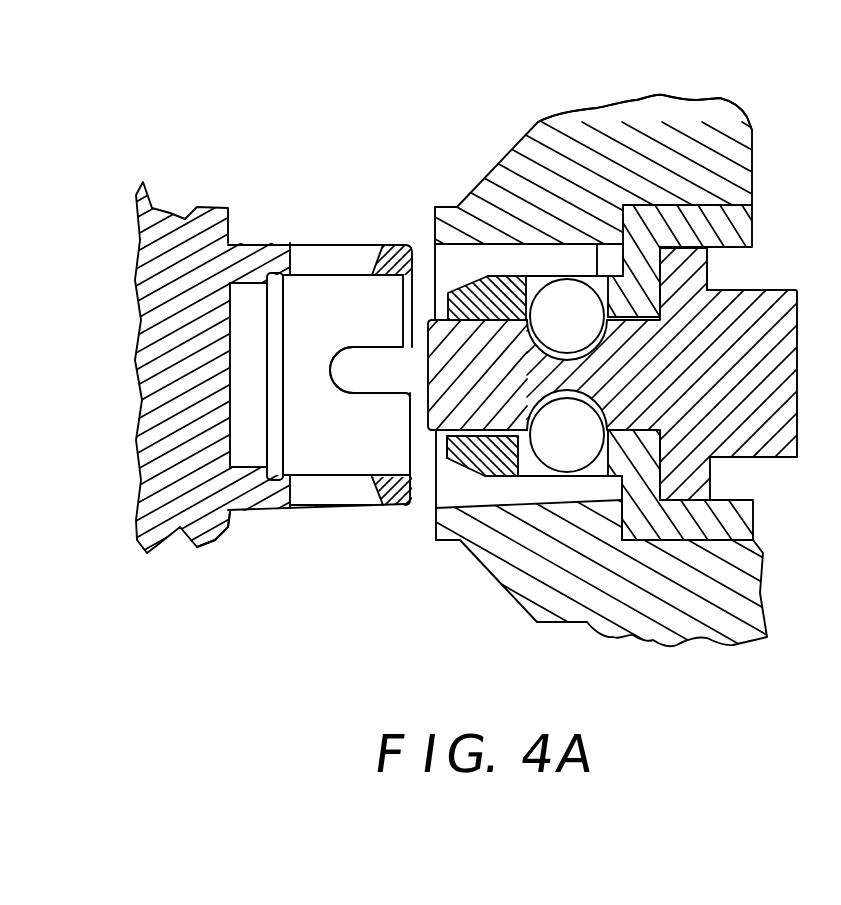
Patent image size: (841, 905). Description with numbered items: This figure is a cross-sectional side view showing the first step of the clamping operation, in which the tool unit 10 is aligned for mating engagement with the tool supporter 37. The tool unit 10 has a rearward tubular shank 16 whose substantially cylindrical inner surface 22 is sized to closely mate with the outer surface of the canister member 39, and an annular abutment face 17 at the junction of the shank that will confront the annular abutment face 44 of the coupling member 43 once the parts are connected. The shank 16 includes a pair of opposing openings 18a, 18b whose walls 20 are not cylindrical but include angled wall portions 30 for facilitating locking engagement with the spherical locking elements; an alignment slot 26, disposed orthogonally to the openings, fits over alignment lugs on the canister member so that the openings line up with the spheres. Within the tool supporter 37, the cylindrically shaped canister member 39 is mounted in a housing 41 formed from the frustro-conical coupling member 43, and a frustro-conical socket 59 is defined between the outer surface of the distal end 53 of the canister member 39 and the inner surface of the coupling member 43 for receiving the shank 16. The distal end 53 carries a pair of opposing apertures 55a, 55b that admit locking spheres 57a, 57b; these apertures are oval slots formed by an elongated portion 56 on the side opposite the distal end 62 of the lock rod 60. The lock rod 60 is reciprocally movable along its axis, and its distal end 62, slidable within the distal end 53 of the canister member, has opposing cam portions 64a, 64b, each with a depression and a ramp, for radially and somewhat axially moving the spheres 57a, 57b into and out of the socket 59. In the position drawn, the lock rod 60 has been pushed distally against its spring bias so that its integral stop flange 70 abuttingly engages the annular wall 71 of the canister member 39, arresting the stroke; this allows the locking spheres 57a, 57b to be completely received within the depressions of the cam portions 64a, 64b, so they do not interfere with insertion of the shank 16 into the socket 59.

The tool unit 10 is at (183, 193).
The tubular shank 16 is at (268, 242).
The abutment face 17 is at (232, 535).
The opening 18a is at (340, 244).
The opening 18b is at (320, 508).
The walls of the openings 20 is at (309, 259).
The inner surface 22 is at (326, 320).
The alignment slot 26 is at (367, 390).
The angled wall portions 30 is at (360, 252).
The tool supporter 37 is at (598, 104).
The canister member 39 is at (437, 515).
The housing 41 is at (521, 603).
The coupling member 43 is at (566, 190).
The annular abutment face 44 is at (437, 540).
The distal end of the canister member 53 is at (447, 468).
The aperture 55a is at (530, 290).
The aperture 55b is at (523, 478).
The elongated portion 56 is at (607, 295).
The locking sphere 57a is at (553, 330).
The locking sphere 57b is at (553, 449).
The socket 59 is at (455, 262).
The lock rod 60 is at (641, 377).
The distal end of the lock rod 62 is at (440, 369).
The cam portion 64a is at (525, 325).
The cam portion 64b is at (530, 420).
The stop flange 70 is at (700, 270).
The annular wall 71 is at (655, 272).